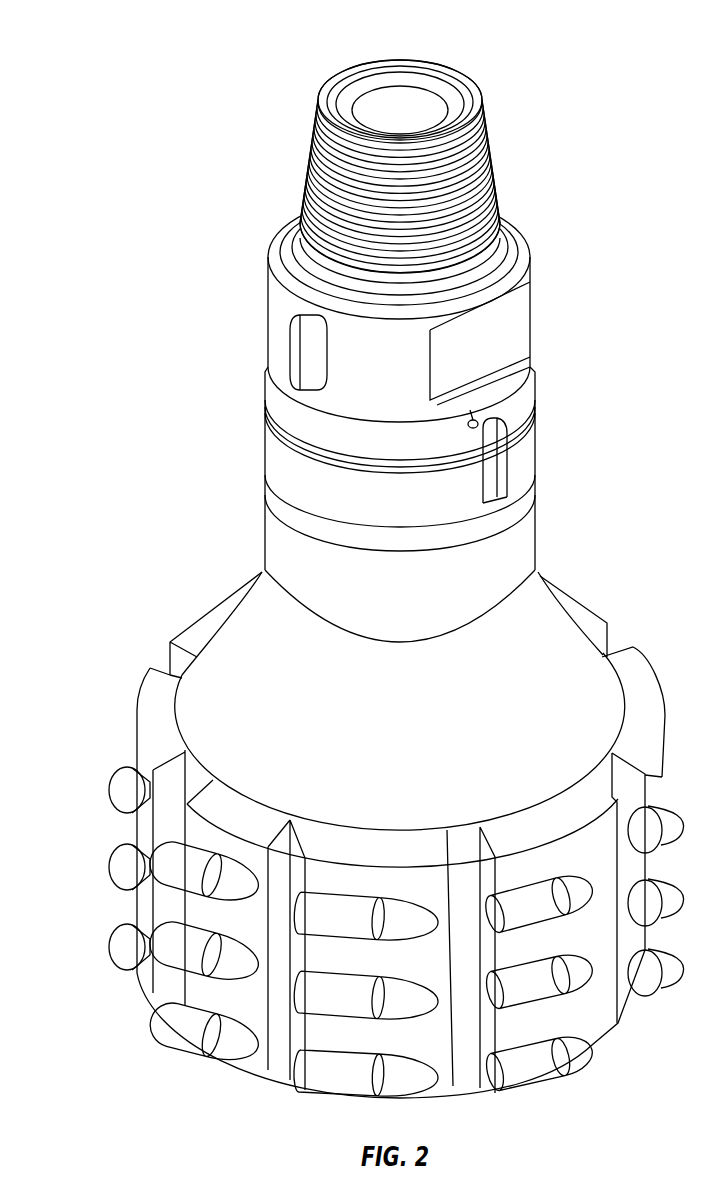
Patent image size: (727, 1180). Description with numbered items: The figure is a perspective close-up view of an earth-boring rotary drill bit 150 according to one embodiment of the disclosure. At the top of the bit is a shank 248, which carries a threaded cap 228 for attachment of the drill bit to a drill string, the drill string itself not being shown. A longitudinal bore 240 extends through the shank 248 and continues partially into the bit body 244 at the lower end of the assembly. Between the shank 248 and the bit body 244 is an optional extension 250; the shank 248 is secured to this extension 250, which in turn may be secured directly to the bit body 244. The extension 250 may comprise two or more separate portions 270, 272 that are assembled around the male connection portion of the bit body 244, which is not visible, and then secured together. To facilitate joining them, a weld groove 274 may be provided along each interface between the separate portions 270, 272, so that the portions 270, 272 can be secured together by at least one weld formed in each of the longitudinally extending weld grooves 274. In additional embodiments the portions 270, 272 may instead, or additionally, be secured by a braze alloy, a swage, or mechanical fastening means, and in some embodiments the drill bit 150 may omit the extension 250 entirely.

The earth-boring rotary drill bit 150 is at (129, 78).
The longitudinal bore 240 is at (400, 108).
The threaded cap 228 is at (318, 170).
The shank 248 is at (260, 258).
The extension 250 is at (258, 410).
The separate portion of the extension 270 is at (278, 455).
The separate portion of the extension 272 is at (525, 437).
The weld groove 274 is at (492, 480).
The bit body 244 is at (99, 781).